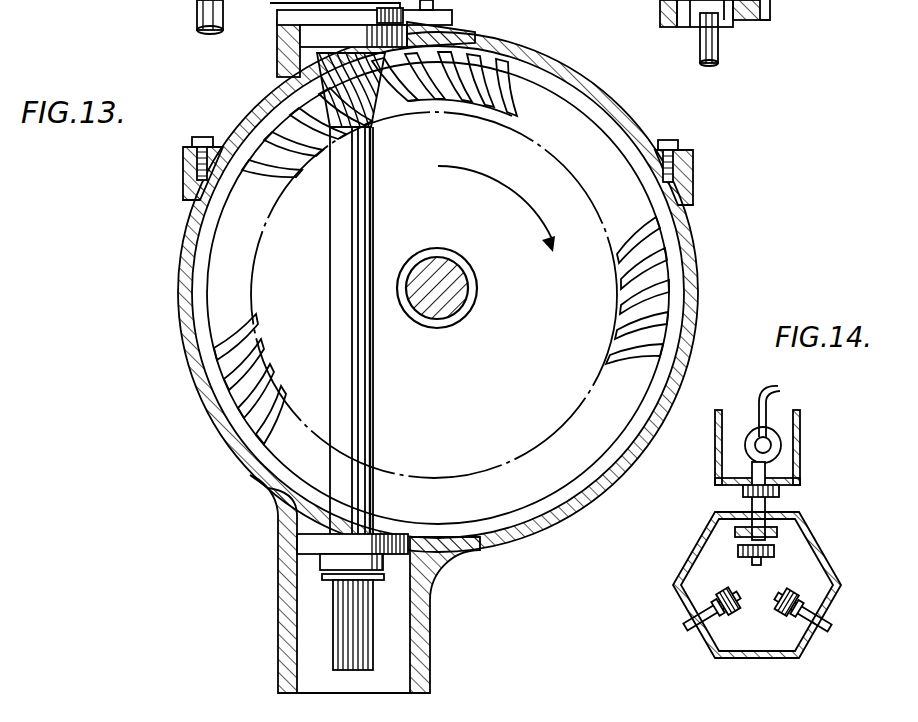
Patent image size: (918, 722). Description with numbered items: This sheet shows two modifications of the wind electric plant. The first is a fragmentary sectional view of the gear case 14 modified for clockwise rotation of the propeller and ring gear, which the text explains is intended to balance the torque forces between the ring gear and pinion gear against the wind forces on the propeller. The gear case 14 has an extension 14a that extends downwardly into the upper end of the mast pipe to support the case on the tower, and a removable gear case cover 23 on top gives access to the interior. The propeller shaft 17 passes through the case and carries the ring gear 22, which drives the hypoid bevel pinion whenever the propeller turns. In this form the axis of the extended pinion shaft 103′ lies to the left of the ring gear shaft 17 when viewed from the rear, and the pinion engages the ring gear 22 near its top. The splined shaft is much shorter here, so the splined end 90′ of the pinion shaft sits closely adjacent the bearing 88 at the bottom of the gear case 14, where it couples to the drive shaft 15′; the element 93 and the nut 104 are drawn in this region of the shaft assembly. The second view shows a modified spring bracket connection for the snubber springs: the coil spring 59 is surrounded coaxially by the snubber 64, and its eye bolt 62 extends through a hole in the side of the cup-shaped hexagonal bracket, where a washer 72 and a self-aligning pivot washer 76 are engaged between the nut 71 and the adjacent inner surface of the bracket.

In FIG. 13, the gear case 14 is at (702, 305).
In FIG. 13, the extension 14a is at (284, 597).
In FIG. 13, the drive shaft 15′ is at (223, 14).
In FIG. 13, the propeller shaft 17 is at (448, 305).
In FIG. 13, the ring gear 22 is at (660, 328).
In FIG. 13, the gear case cover 23 is at (636, 128).
In FIG. 13, the bearing 88 is at (312, 548).
In FIG. 13, the splined end 90′ is at (345, 620).
In FIG. 13, the bearing assembly 93 is at (637, 11).
In FIG. 13, the extended pinion shaft 103′ is at (358, 405).
In FIG. 13, the nut 104 is at (430, 7).
In FIG. 14, the coil spring 59 is at (786, 389).
In FIG. 14, the eye bolt 62 is at (782, 443).
In FIG. 14, the snubber 64 is at (808, 461).
In FIG. 14, the nut 71 is at (793, 587).
In FIG. 14, the washer 72 is at (783, 491).
In FIG. 14, the self-aligning pivot washer 76 is at (780, 532).